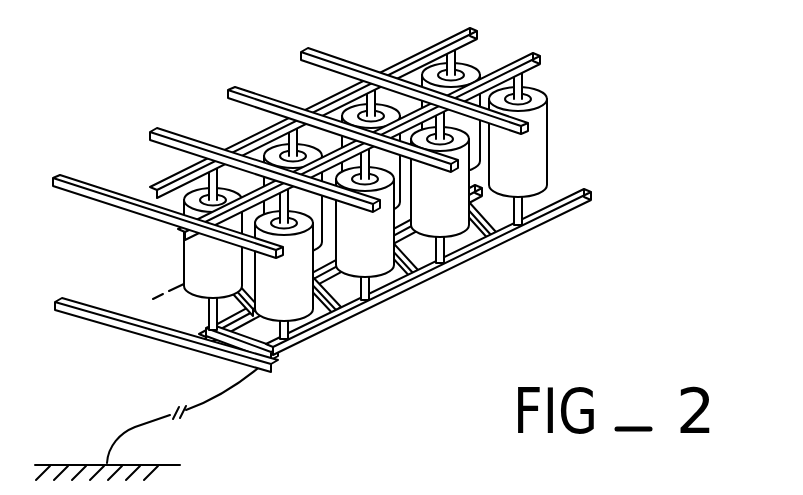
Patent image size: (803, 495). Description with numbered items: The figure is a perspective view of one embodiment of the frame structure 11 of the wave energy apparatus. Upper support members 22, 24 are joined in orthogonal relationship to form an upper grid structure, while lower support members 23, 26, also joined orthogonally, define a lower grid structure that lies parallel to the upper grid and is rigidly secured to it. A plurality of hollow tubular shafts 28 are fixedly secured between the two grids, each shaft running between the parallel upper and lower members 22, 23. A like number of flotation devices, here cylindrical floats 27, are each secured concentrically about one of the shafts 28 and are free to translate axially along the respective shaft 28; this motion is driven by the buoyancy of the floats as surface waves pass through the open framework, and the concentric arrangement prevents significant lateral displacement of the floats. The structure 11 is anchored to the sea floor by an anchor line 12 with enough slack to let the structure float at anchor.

The frame structure 11 is at (233, 32).
The anchor line 12 is at (217, 400).
The upper support member 22 is at (226, 204).
The lower support member 23 is at (238, 317).
The upper support member 24 is at (240, 92).
The lower support member 26 is at (182, 333).
The cylindrical float 27 is at (528, 183).
The hollow tubular shaft 28 is at (524, 78).